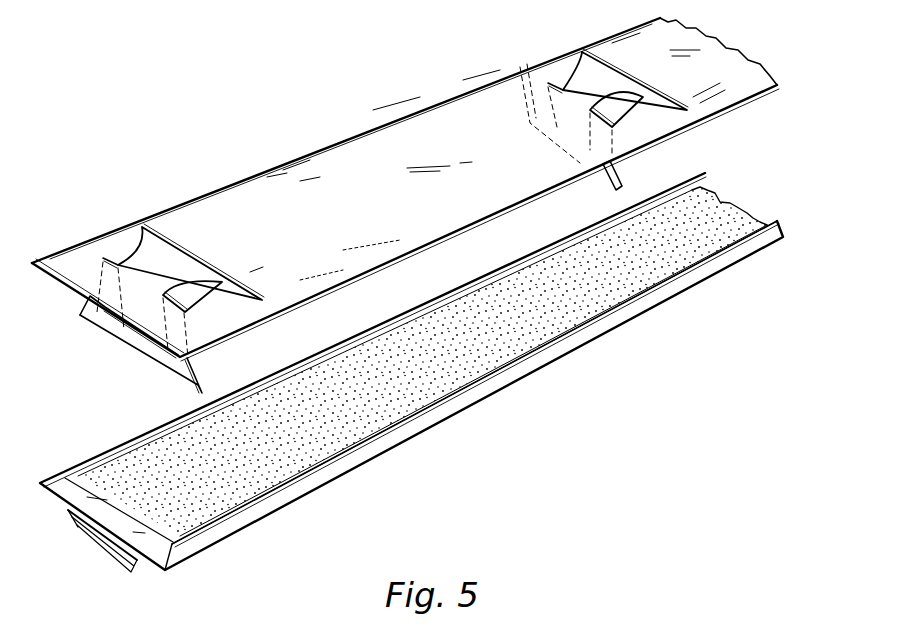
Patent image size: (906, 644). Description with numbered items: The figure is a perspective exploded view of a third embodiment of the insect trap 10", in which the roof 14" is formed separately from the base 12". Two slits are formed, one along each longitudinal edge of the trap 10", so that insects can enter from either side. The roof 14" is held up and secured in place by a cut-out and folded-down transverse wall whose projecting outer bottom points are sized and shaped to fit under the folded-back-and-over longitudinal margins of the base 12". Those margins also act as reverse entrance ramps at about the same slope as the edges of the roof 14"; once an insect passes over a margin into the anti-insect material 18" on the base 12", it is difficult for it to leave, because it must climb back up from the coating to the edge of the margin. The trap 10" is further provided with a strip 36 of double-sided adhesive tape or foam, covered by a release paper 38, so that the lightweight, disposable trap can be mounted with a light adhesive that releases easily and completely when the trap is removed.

The trap 10 is at (78, 436).
The base 12 is at (287, 513).
The roof 14 is at (340, 157).
The anti-insect material 18 is at (407, 387).
The strip of double-sided adhesive tape 36 is at (78, 527).
The release paper 38 is at (110, 550).